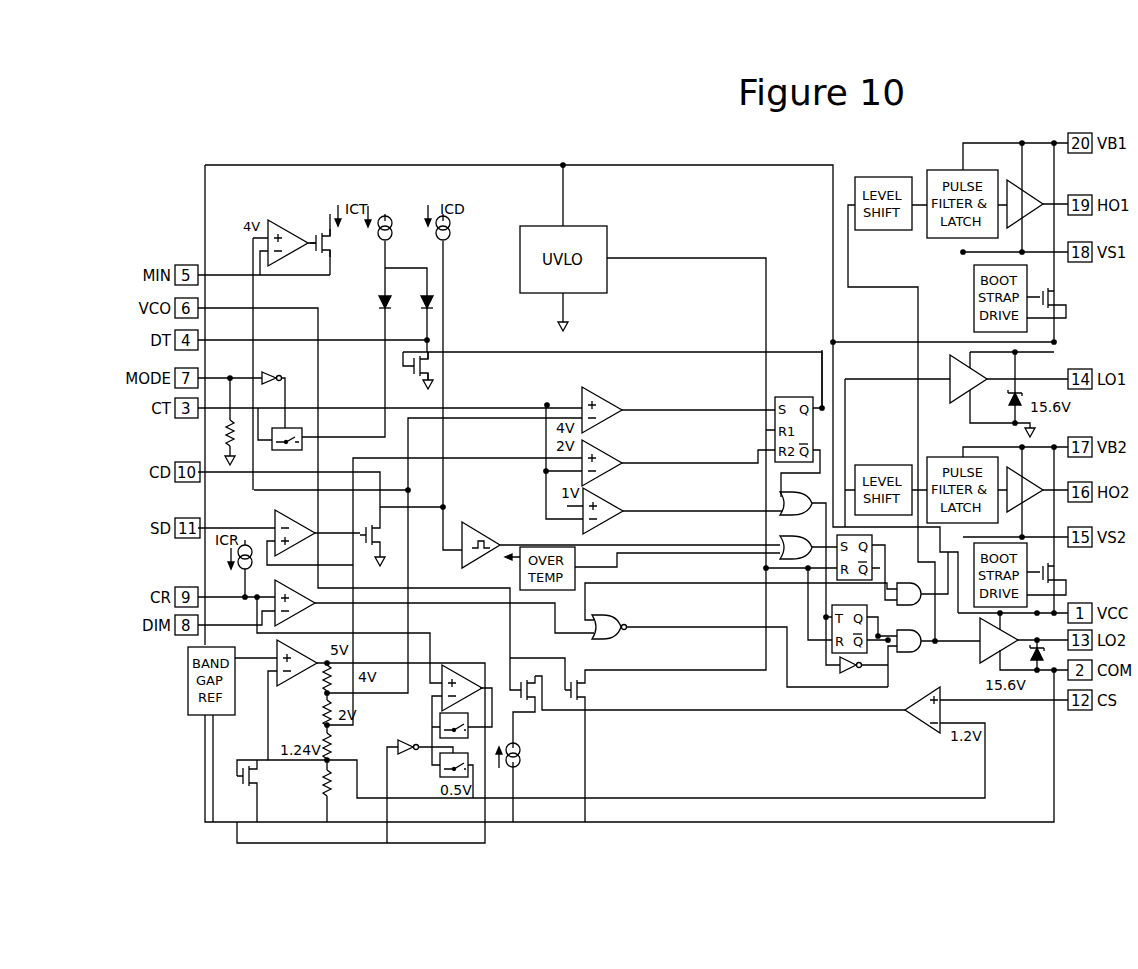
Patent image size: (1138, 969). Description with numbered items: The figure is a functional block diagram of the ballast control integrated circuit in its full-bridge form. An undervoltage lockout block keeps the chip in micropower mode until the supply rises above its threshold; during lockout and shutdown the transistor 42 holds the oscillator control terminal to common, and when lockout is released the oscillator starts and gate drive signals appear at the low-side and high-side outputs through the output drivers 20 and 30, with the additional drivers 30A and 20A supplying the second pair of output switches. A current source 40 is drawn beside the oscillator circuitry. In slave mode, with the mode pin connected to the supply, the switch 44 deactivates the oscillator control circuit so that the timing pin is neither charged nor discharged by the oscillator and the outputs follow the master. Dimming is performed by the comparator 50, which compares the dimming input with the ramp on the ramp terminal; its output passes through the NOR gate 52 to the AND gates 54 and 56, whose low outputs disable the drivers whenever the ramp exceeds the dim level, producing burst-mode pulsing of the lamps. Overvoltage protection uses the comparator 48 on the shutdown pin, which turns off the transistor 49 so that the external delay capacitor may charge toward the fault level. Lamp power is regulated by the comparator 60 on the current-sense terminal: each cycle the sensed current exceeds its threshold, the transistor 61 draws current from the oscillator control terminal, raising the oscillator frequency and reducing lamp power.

The low side output driver LO1 20 is at (963, 402).
The driver 20A is at (976, 652).
The high side output driver HO1 30 is at (1016, 202).
The driver 30A is at (1013, 487).
The VCO current source IVCO 40 is at (522, 758).
The transistor 42 is at (589, 690).
The switch 44 is at (297, 428).
The comparator 48 is at (304, 523).
The transistor 49 is at (382, 543).
The comparator 50 is at (315, 605).
The NOR gate 52 is at (613, 618).
The AND gate 54 is at (907, 653).
The AND gate 56 is at (907, 583).
The comparator 60 is at (908, 720).
The transistor 61 is at (533, 686).